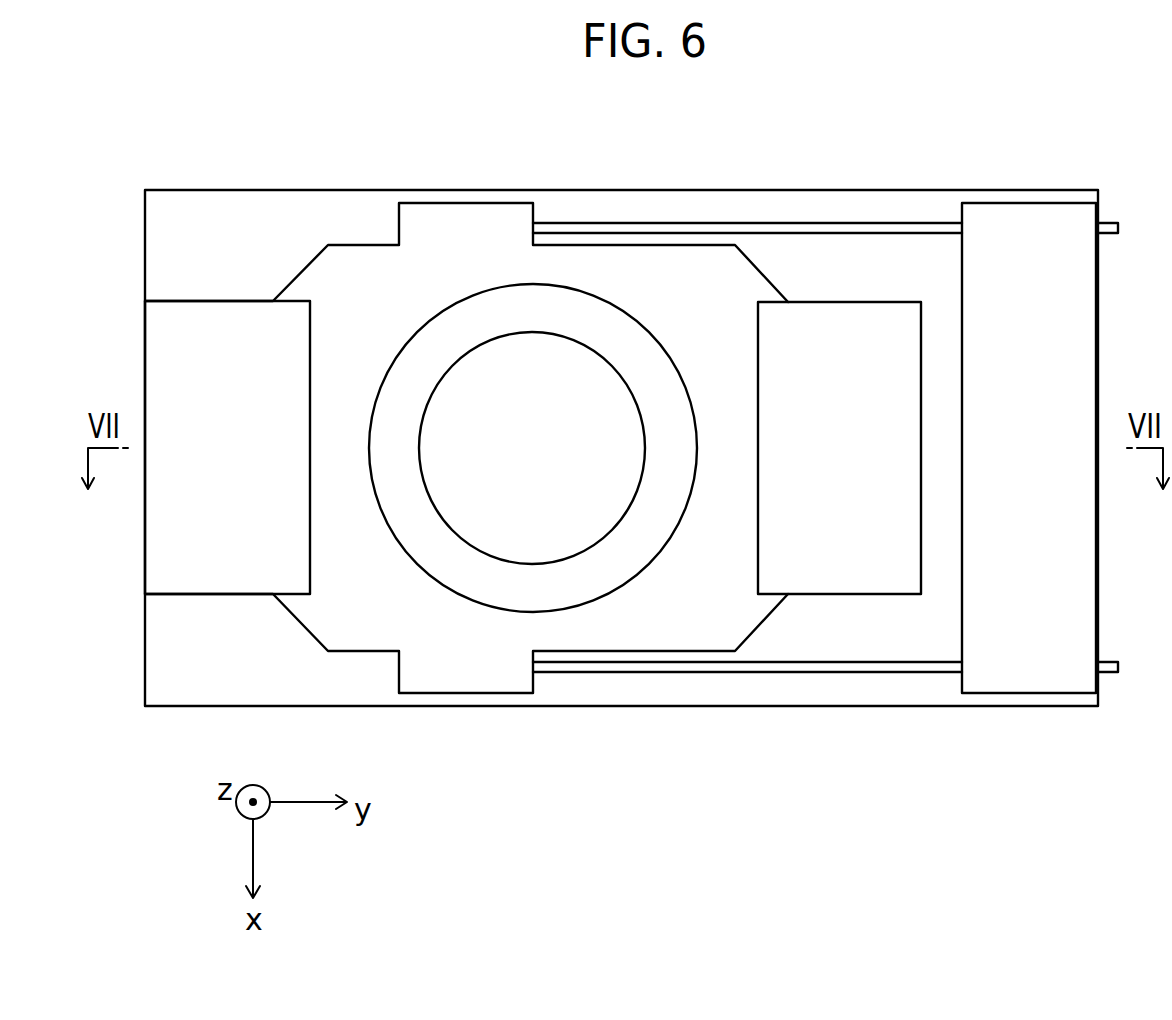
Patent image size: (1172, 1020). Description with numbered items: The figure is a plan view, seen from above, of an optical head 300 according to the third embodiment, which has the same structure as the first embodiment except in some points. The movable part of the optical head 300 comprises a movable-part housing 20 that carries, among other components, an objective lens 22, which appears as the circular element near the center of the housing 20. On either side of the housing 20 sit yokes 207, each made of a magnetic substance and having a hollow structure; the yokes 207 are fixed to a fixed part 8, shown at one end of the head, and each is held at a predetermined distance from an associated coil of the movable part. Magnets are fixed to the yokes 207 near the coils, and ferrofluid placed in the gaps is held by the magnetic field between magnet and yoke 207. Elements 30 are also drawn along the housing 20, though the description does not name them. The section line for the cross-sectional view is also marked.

The optical head 300 is at (208, 114).
The movable-part housing 20 is at (581, 262).
The objective lens 22 is at (498, 377).
The guide rail 30 is at (815, 229).
The fixed part 8 is at (1013, 230).
The yoke 207 is at (212, 567).